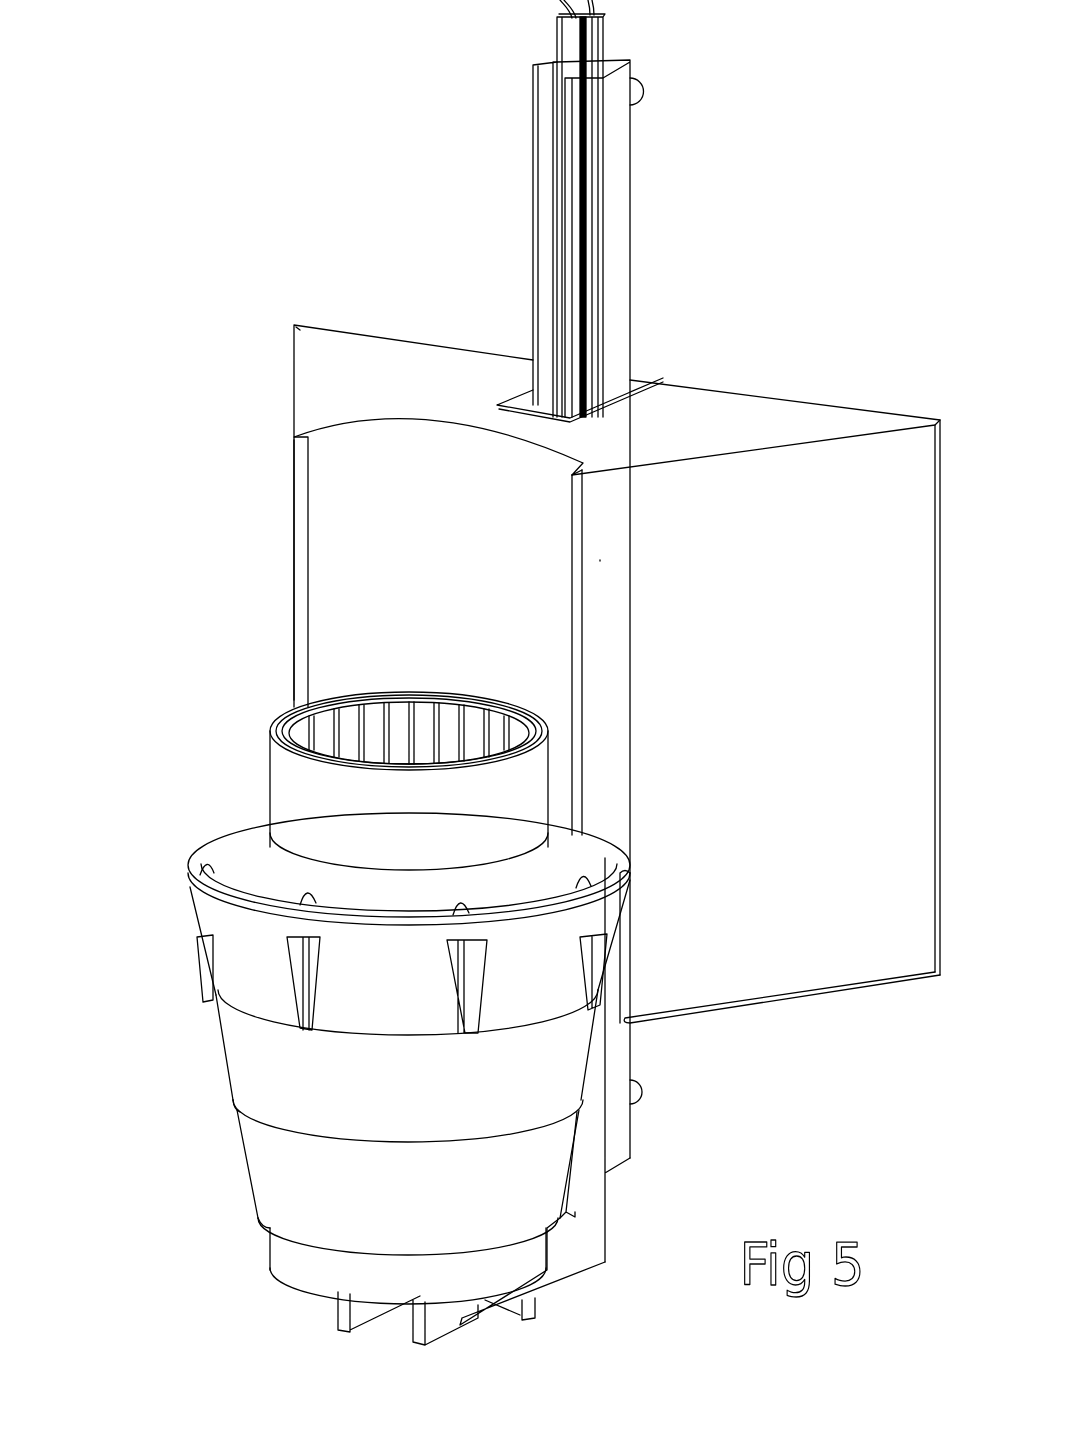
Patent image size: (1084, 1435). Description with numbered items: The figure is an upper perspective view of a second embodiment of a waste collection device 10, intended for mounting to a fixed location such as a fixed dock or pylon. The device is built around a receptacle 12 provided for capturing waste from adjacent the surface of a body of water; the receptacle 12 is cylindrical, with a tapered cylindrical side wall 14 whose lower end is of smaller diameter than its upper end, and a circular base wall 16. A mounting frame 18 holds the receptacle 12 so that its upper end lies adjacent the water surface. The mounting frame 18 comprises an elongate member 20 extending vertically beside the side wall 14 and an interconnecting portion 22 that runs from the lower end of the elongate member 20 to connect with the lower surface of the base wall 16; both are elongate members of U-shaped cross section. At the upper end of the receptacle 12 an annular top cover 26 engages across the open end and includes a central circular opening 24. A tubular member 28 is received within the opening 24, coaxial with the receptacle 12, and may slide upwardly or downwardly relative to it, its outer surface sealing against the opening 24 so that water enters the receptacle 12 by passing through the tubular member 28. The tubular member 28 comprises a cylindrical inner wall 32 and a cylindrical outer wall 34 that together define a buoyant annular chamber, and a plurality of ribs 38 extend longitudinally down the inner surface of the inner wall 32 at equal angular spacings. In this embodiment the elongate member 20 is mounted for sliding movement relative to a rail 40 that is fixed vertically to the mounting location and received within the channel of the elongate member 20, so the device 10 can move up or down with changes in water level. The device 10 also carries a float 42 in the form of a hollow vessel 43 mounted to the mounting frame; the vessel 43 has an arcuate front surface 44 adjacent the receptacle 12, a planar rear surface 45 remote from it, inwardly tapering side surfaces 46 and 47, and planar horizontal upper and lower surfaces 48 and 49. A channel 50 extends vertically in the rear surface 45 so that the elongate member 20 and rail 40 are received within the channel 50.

The waste collection device 10 is at (138, 714).
The receptacle 12 is at (272, 1074).
The cylindrical side wall 14 is at (290, 1173).
The circular base wall 16 is at (285, 1291).
The mounting frame 18 is at (665, 271).
The elongate member 20 is at (598, 1100).
The interconnecting portion 22 is at (572, 1253).
The opening 24 is at (262, 834).
The top cover 26 is at (262, 856).
The tubular member 28 is at (285, 710).
The cylindrical inner wall 32 is at (395, 722).
The cylindrical outer wall 34 is at (400, 813).
The ribs 38 is at (450, 726).
The rail 40 is at (621, 176).
The float 42 is at (783, 420).
The vessel 43 is at (905, 475).
The arcuate front surface 44 is at (405, 556).
The planar rear surface 45 is at (428, 340).
The inwardly tapering side surface 46 is at (755, 835).
The inwardly tapering side surface 47 is at (290, 475).
The upper surface 48 is at (336, 348).
The lower surface 49 is at (822, 1005).
The channel 50 is at (642, 378).